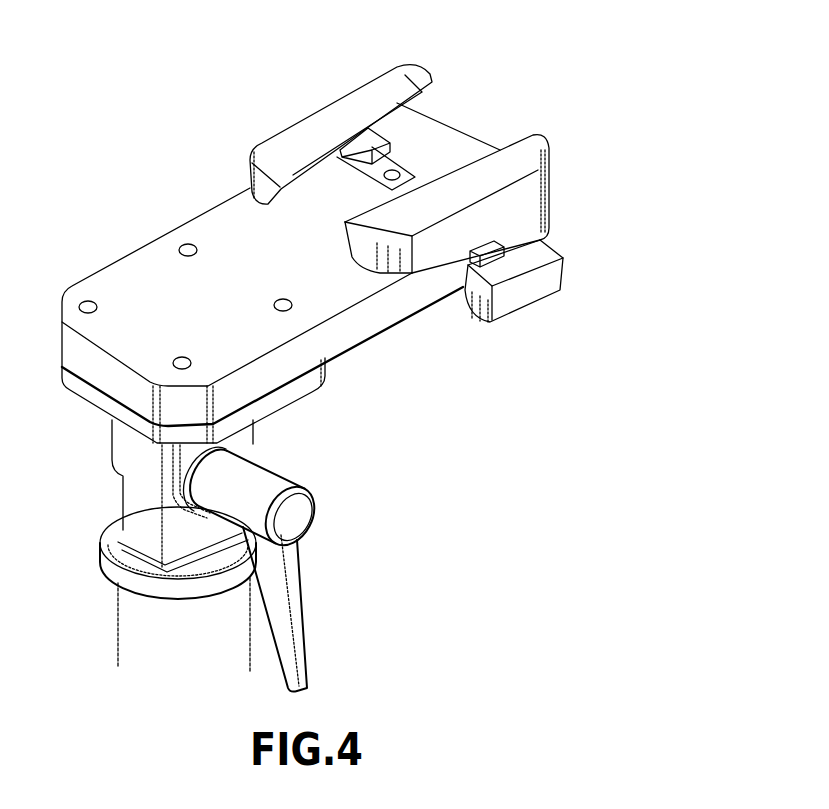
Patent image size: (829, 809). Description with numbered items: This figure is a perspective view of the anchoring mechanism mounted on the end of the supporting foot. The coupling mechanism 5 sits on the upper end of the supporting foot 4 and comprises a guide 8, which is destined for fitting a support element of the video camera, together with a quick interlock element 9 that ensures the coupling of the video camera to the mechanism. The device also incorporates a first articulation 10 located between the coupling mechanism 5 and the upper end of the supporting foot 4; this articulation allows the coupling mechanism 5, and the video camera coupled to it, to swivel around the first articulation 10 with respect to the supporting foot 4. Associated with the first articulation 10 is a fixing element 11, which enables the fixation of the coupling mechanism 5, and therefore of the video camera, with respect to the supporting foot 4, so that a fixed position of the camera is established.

The supporting foot 4 is at (152, 627).
The coupling mechanism 5 is at (432, 382).
The guide 8 is at (478, 177).
The quick interlock element 9 is at (527, 270).
The first articulation 10 is at (198, 470).
The fixing element 11 is at (275, 575).